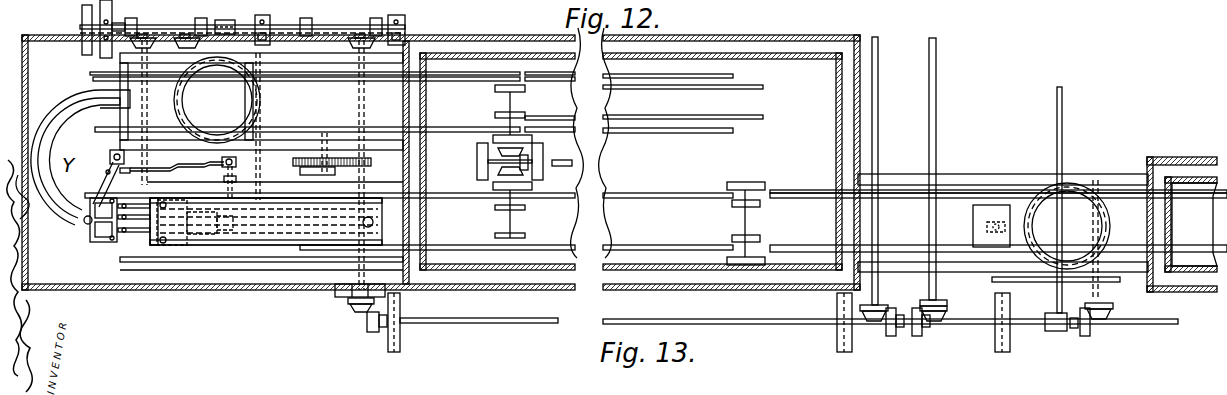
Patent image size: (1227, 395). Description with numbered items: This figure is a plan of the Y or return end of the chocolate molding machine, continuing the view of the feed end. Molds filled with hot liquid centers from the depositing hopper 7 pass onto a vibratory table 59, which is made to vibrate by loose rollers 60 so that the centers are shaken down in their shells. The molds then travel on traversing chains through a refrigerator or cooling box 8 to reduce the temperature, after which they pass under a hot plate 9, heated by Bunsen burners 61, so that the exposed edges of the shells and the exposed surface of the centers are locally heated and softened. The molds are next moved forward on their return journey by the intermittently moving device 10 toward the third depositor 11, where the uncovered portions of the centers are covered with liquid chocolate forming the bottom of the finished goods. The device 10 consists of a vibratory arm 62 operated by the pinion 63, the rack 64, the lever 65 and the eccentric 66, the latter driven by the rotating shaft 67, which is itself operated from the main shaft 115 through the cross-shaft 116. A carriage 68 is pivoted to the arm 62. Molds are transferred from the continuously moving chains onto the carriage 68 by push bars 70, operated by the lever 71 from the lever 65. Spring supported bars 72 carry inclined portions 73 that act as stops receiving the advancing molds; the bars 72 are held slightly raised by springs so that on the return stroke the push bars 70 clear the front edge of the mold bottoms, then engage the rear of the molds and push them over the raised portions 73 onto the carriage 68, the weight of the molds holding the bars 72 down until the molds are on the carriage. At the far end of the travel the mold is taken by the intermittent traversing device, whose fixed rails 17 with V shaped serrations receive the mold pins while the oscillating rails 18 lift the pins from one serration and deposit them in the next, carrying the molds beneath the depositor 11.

The depositing hopper 7 is at (1044, 190).
The refrigerator or cooling box 8 is at (631, 161).
The hot plate 9 is at (295, 242).
The intermittently moving device 10 is at (76, 108).
The depositor 11 is at (217, 100).
The fixed rails 17 is at (913, 199).
The rails 18 is at (815, 200).
The vibratory table 59 is at (990, 218).
The loose rollers 60 is at (987, 223).
The Bunsen burners 61 is at (200, 240).
The vibratory arm 62 is at (104, 172).
The pinion 63 is at (111, 151).
The rack 64 is at (104, 178).
The lever 65 is at (169, 166).
The eccentric 66 is at (293, 162).
The rotating shaft 67 is at (325, 135).
The carriage 68 is at (102, 238).
The push bars 70 is at (178, 244).
The lever 71 is at (231, 190).
The spring supported bars 72 is at (154, 244).
The inclined portions 73 is at (140, 230).
The main shaft 115 is at (518, 322).
The cross-shaft 116 is at (366, 101).